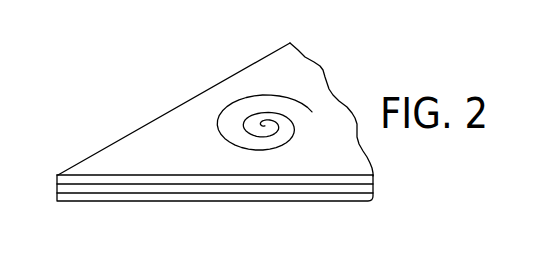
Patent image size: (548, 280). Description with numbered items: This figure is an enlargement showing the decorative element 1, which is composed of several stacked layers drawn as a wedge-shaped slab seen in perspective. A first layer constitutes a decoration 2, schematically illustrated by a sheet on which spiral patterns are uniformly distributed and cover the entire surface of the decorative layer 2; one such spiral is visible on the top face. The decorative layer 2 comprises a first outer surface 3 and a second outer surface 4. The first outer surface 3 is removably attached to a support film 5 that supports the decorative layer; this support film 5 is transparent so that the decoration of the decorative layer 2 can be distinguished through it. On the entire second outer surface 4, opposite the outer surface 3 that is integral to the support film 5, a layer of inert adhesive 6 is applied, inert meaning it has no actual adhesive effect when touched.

The decorative element 1 is at (104, 106).
The decorative layer 2 is at (88, 190).
The first outer surface 3 is at (77, 180).
The second outer surface 4 is at (127, 193).
The support film 5 is at (182, 122).
The layer of inert adhesive 6 is at (173, 198).